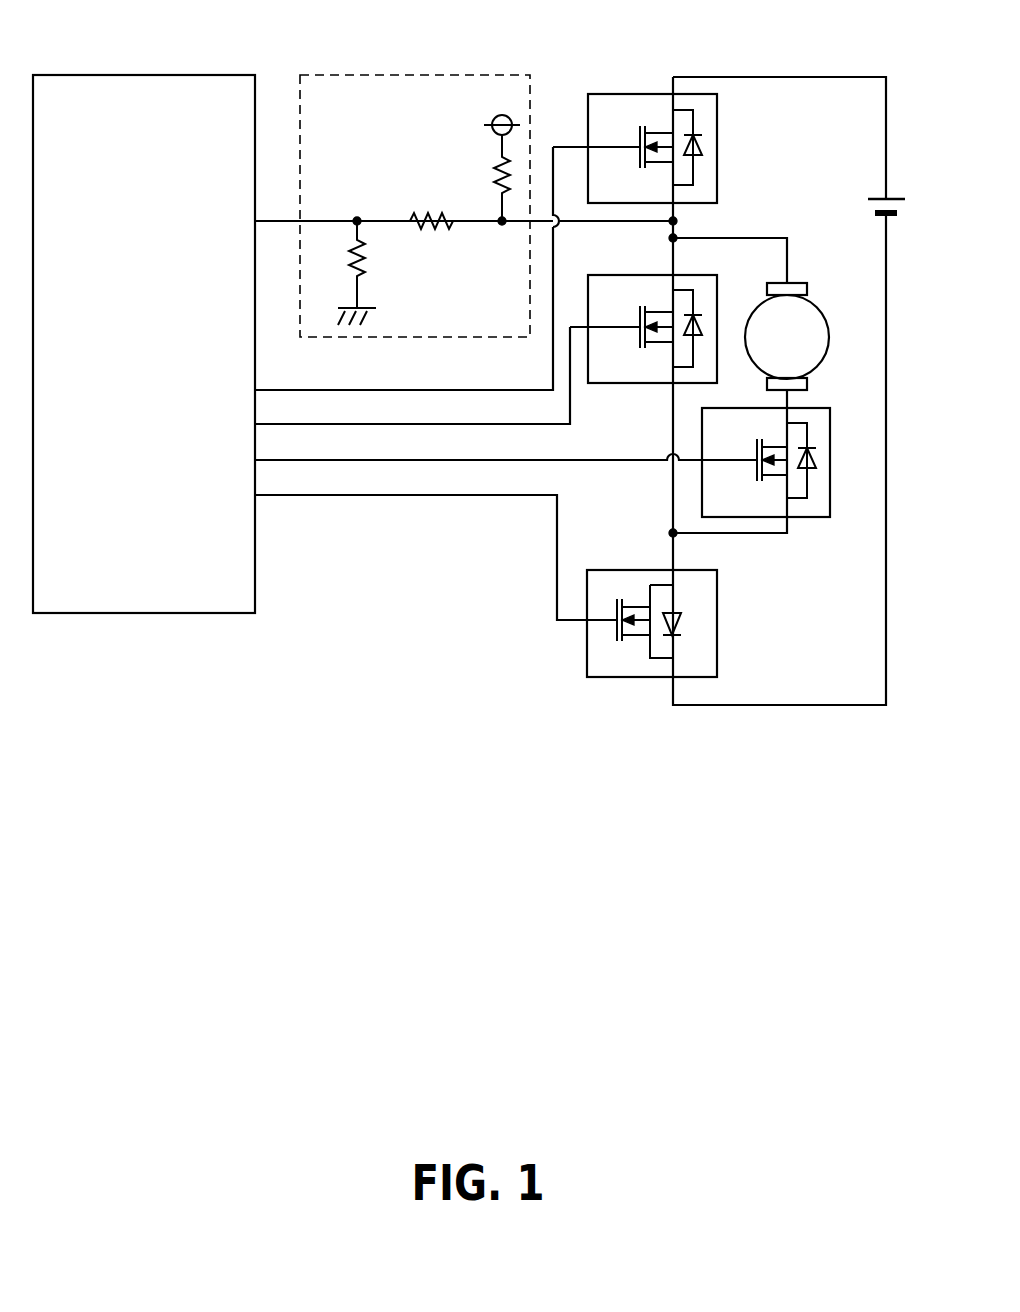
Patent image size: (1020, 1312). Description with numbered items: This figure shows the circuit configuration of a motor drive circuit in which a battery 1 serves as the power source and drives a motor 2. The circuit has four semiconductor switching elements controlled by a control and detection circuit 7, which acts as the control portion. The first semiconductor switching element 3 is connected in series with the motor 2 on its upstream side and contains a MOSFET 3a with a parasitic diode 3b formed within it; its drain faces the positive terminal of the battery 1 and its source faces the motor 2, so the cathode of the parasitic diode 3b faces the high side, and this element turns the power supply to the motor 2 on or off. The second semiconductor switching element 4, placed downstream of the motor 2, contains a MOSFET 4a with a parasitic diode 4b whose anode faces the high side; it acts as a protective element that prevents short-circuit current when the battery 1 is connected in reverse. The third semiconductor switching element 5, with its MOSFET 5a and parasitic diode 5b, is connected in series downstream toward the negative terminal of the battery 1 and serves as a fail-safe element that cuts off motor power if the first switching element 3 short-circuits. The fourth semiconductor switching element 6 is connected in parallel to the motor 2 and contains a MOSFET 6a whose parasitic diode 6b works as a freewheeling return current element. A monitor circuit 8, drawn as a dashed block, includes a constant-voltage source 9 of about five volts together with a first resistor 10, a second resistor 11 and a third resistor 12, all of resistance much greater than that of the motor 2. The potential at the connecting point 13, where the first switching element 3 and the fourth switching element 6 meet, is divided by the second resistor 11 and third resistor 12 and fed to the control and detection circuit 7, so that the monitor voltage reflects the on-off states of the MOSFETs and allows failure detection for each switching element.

The battery 1 is at (893, 199).
The motor 2 is at (820, 306).
The first semiconductor switching element 3 is at (663, 128).
The MOSFET 3a is at (636, 150).
The parasitic diode 3b is at (702, 147).
The second semiconductor switching element 4 is at (670, 624).
The MOSFET 4a is at (622, 626).
The parasitic diode 4b is at (678, 620).
The third semiconductor switching element 5 is at (791, 498).
The MOSFET 5a is at (750, 465).
The parasitic diode 5b is at (815, 460).
The fourth semiconductor switching element 6 is at (658, 317).
The MOSFET 6a is at (636, 330).
The parasitic diode 6b is at (700, 348).
The control and detection circuit 7 is at (185, 75).
The monitor circuit 8 is at (416, 75).
The constant-voltage source 9 is at (492, 120).
The first resistor 10 is at (497, 158).
The second resistor 11 is at (442, 228).
The third resistor 12 is at (360, 283).
The connecting point 13 is at (680, 221).